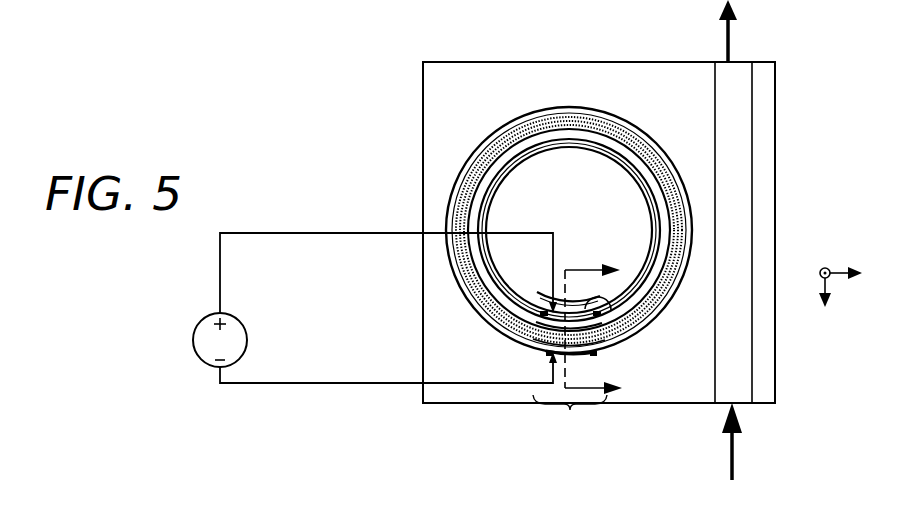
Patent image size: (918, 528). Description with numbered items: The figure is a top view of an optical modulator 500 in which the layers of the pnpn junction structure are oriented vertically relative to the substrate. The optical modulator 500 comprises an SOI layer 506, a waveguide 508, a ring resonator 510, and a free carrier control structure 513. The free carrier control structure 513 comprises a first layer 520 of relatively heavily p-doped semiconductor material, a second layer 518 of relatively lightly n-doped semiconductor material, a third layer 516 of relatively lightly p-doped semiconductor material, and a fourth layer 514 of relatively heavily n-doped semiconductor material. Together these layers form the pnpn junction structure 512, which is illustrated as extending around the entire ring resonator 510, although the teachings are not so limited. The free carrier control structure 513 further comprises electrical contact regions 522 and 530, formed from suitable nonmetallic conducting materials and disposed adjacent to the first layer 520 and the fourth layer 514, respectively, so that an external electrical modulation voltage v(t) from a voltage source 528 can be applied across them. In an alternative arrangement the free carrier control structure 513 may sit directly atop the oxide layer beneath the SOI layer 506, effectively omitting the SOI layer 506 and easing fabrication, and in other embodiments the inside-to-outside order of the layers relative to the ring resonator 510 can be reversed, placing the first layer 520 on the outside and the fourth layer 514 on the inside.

The optical modulator 500 is at (382, 82).
The SOI layer 506 is at (438, 137).
The waveguide 508 is at (753, 115).
The ring resonator 510 is at (446, 194).
The pnpn junction structure 512 is at (362, 280).
The free carrier control structure 513 is at (570, 421).
The fourth layer 514 is at (533, 353).
The third layer 516 is at (533, 343).
The second layer 518 is at (536, 327).
The first layer 520 is at (546, 310).
The electrical contact region 522 is at (616, 316).
The voltage source 528 is at (193, 340).
The electrical contact region 530 is at (587, 357).